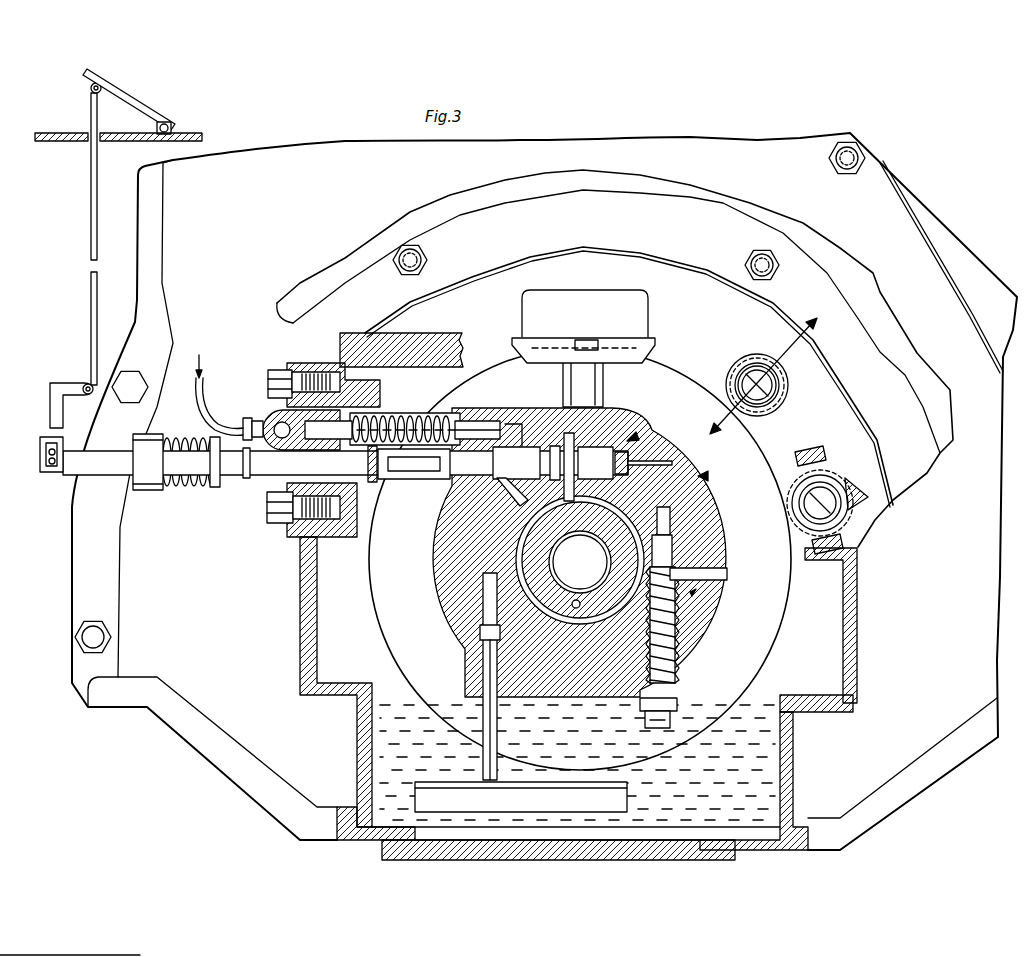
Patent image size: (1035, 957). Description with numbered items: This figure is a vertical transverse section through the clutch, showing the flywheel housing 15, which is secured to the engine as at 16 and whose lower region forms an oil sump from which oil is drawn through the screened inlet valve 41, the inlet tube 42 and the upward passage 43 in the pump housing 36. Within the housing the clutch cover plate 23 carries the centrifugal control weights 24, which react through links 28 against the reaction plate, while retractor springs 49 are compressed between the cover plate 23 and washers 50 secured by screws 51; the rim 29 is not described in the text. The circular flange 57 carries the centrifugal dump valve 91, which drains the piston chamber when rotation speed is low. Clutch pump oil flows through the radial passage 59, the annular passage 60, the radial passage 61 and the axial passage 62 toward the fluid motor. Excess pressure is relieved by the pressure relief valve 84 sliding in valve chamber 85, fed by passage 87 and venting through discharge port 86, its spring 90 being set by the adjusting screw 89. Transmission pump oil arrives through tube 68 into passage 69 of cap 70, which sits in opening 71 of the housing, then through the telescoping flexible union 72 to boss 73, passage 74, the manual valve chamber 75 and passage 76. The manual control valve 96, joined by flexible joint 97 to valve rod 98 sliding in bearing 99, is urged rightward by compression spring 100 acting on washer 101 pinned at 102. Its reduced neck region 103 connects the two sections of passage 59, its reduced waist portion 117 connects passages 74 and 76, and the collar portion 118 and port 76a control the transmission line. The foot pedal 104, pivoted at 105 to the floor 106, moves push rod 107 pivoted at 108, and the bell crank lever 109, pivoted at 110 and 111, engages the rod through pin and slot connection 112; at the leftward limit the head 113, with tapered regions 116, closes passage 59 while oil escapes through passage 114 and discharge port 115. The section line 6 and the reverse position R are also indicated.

The section line 6 is at (774, 380).
The flywheel housing 15 is at (318, 142).
The securing means 16 is at (866, 158).
The clutch cover plate 23 is at (526, 254).
The centrifugal control weight 24 is at (612, 298).
The link 28 is at (645, 350).
The rim 29 is at (606, 256).
The pump housing 36 is at (716, 547).
The screened inlet valve 41 is at (521, 797).
The inlet tube 42 is at (483, 752).
The passage 43 is at (482, 621).
The retractor spring 49 is at (757, 356).
The washer 50 is at (778, 388).
The screw 51 is at (770, 392).
The circular flange 57 is at (782, 630).
The radial passage 59 is at (583, 373).
The annular passage 60 is at (515, 549).
The radial passage 61 is at (580, 562).
The axial passage 62 is at (580, 562).
The tube 68 is at (206, 378).
The passage 69 is at (272, 422).
The cap 70 is at (285, 490).
The opening 71 is at (396, 367).
The telescoping flexible union 72 is at (400, 419).
The boss 73 is at (465, 410).
The passage 74 is at (505, 413).
The manual valve chamber 75 is at (440, 492).
The passage 76 is at (495, 496).
The port 76a is at (480, 407).
The pressure relief valve 84 is at (692, 593).
The valve chamber 85 is at (676, 652).
The discharge port 86 is at (727, 576).
The passage 87 is at (670, 511).
The adjusting screw 89 is at (674, 702).
The spring 90 is at (662, 690).
The centrifugal dump valve 91 is at (578, 343).
The manual control valve 96 is at (634, 436).
The flexible joint 97 is at (410, 480).
The valve rod 98 is at (345, 463).
The bearing 99 is at (150, 491).
The compression spring 100 is at (176, 487).
The washer 101 is at (215, 488).
The pin 102 is at (247, 479).
The reduced neck region 103 is at (562, 445).
The foot pedal 104 is at (138, 100).
The pivot 105 is at (172, 127).
The floor 106 is at (202, 137).
The push rod 107 is at (90, 283).
The pivot 108 is at (91, 90).
The bell crank lever 109 is at (50, 405).
The pivot 110 is at (54, 383).
The pivot 111 is at (85, 384).
The pin and slot connection 112 is at (53, 473).
The head 113 is at (612, 416).
The passage 114 is at (596, 486).
The discharge port 115 is at (708, 475).
The tapered regions 116 is at (600, 409).
The reduced waist portion 117 is at (516, 463).
The collar portion 118 is at (556, 448).
The reverse position R is at (705, 598).